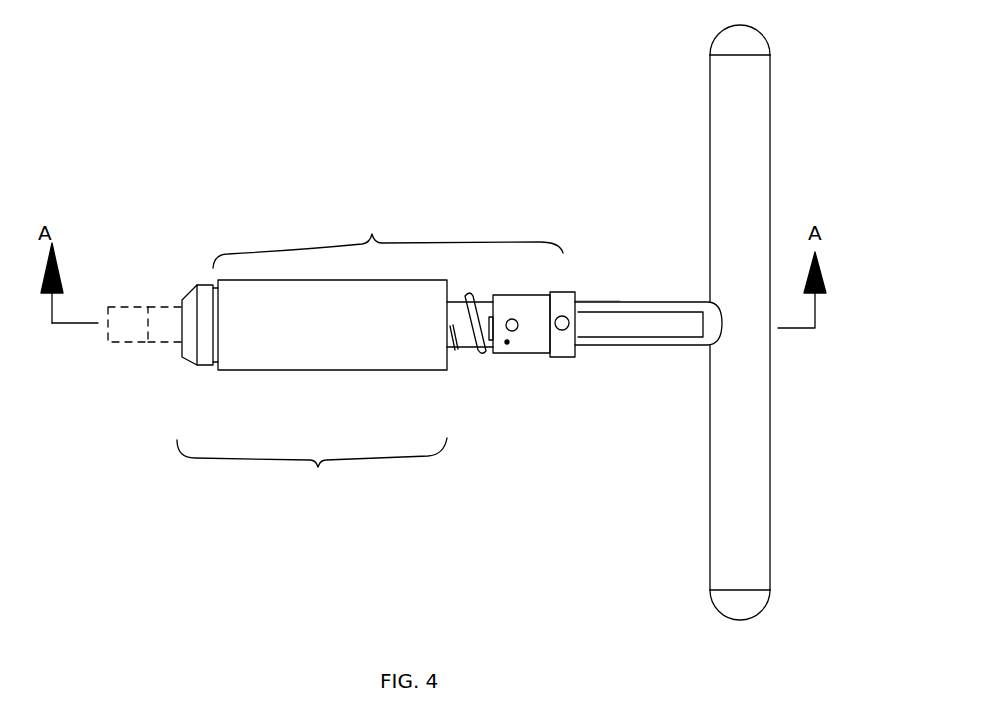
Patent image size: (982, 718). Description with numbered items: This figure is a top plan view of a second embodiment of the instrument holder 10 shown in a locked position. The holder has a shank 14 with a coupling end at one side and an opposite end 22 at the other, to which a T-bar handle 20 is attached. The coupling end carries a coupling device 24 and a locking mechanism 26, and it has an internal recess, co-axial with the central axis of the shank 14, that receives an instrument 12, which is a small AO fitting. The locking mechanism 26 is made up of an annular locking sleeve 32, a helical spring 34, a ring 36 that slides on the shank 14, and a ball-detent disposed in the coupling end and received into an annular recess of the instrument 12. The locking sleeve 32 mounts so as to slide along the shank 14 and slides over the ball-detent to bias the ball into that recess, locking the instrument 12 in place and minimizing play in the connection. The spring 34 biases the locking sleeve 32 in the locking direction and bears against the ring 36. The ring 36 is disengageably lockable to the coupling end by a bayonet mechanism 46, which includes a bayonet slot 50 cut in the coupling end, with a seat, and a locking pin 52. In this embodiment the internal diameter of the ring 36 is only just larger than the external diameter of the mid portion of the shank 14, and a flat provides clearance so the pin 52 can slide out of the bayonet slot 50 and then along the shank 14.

The instrument holder 10 is at (515, 196).
The instrument 12 is at (127, 305).
The shank 14 is at (627, 299).
The T-bar handle 20 is at (770, 492).
The opposite end 22 is at (707, 347).
The coupling device 24 is at (312, 470).
The locking mechanism 26 is at (388, 236).
The annular locking sleeve 32 is at (261, 372).
The helical spring 34 is at (465, 348).
The ring 36 is at (540, 289).
The bayonet mechanism 46 is at (508, 344).
The bayonet slot 50 is at (490, 354).
The locking pin 52 is at (512, 318).